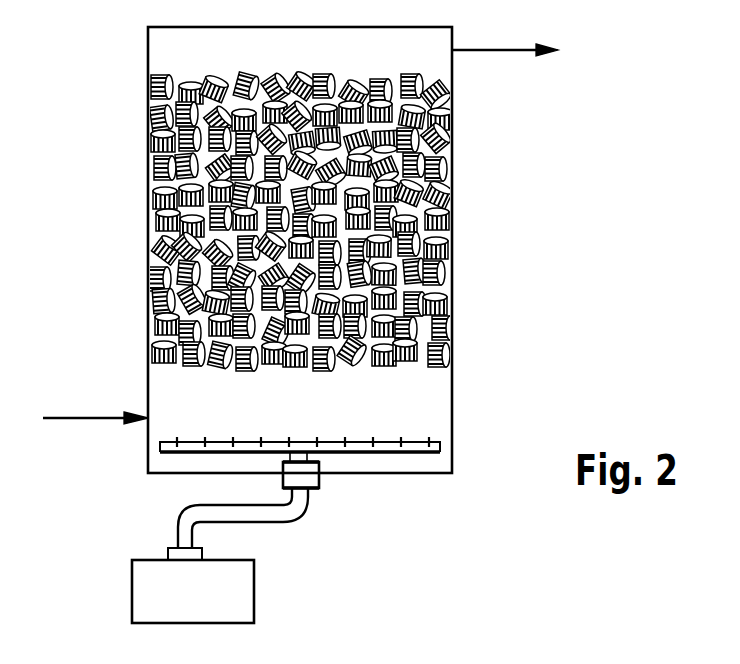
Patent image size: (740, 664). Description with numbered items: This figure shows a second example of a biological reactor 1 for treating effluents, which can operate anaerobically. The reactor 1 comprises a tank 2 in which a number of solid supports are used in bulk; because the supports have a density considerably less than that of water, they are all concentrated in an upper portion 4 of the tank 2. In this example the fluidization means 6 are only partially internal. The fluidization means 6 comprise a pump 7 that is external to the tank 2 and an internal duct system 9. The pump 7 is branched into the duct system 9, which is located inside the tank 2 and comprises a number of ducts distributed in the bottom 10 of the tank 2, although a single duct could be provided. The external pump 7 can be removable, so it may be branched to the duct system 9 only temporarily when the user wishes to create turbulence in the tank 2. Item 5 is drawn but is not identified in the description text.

The biological reactor 1 is at (123, 240).
The tank 2 is at (452, 320).
The upper portion 4 is at (455, 105).
The gas inlet 5 is at (140, 380).
The fluidization means 6 is at (124, 590).
The pump 7 is at (254, 590).
The duct system 9 is at (440, 452).
The bottom 10 is at (385, 470).